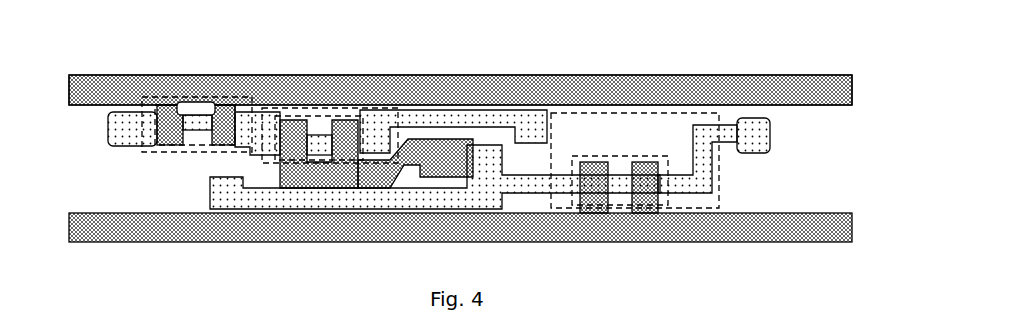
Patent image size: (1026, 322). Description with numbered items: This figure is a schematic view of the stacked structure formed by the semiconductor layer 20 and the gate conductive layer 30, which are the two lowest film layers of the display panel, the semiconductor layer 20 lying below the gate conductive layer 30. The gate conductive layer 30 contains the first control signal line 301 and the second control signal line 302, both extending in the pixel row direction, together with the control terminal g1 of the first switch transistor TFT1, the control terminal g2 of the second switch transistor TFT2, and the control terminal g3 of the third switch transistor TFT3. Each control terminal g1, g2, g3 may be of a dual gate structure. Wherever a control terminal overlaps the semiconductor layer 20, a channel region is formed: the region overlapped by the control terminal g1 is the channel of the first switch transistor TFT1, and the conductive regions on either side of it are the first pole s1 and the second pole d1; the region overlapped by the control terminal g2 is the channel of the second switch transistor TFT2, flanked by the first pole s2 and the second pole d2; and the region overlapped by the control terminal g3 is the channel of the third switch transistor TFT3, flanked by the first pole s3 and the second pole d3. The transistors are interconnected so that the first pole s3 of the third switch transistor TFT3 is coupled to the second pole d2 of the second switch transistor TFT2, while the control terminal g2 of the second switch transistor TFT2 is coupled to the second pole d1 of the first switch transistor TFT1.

The gate conductive layer 30 is at (838, 90).
The second control signal line 302 is at (80, 92).
The first control signal line 301 is at (80, 231).
The semiconductor layer 20 is at (757, 138).
The first switch transistor TFT1 is at (720, 193).
The second switch transistor TFT2 is at (365, 120).
The third switch transistor TFT3 is at (187, 98).
The control terminal of the first switch transistor g1 is at (630, 155).
The control terminal of the second switch transistor g2 is at (315, 117).
The control terminal of the third switch transistor g3 is at (192, 147).
The first pole of the first switch transistor s1 is at (705, 173).
The first pole of the second switch transistor s2 is at (367, 124).
The first pole of the third switch transistor s3 is at (243, 110).
The second pole of the first switch transistor d1 is at (558, 188).
The second pole of the second switch transistor d2 is at (273, 145).
The second pole of the third switch transistor d3 is at (150, 125).